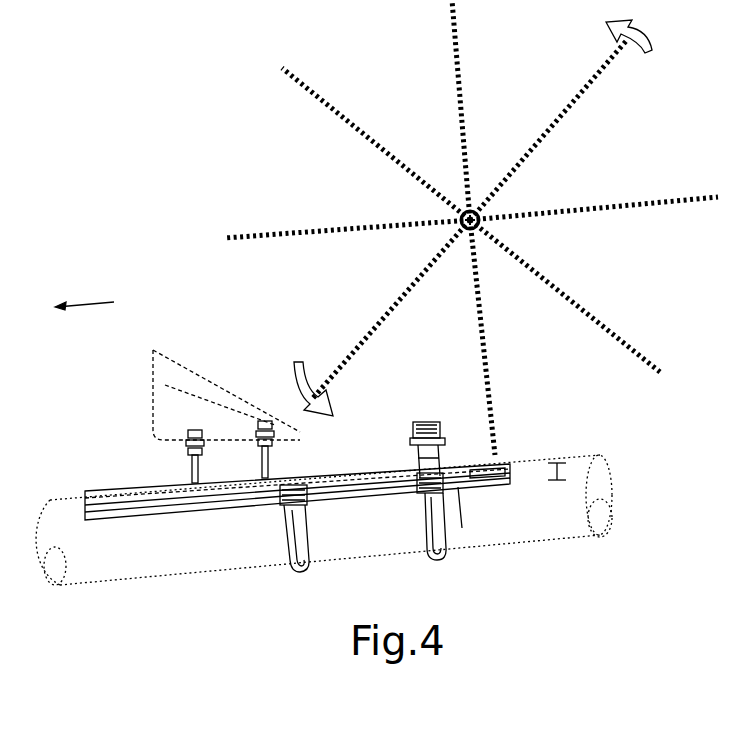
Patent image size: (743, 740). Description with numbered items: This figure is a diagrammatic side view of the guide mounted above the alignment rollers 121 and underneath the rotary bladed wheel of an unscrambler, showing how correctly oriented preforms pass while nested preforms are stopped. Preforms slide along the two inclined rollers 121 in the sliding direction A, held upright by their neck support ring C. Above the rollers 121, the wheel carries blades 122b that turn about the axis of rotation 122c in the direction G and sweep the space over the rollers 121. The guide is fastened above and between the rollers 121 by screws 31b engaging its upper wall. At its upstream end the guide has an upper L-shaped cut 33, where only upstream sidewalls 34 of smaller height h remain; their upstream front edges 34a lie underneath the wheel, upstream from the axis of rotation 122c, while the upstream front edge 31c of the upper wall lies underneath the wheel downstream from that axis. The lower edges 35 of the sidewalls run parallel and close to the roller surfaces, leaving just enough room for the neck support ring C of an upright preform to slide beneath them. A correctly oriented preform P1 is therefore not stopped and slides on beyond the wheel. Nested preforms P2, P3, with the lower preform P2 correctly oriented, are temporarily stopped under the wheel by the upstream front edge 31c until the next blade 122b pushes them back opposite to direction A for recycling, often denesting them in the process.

The axis of rotation of the bladed wheel 122c is at (473, 210).
The blades 122b is at (485, 377).
The rotary alignment rollers 121 is at (145, 553).
The upper L-shaped cut 33 is at (498, 461).
The upstream front edges of the sidewalls 34a is at (513, 472).
The upstream sidewalls 34 is at (480, 512).
The lower edges of the sidewalls 35 is at (480, 495).
The screws 31b is at (260, 420).
The upstream front edge of the upper wall 31c is at (417, 455).
The direction of rotation of the shaft G is at (313, 381).
The sliding direction A is at (84, 295).
The neck support ring C is at (282, 507).
The correctly oriented preform P1 is at (295, 553).
The lower nested preform P2 is at (440, 540).
The upper nested preform P3 is at (437, 440).
The height of the upstream sidewalls h is at (565, 473).